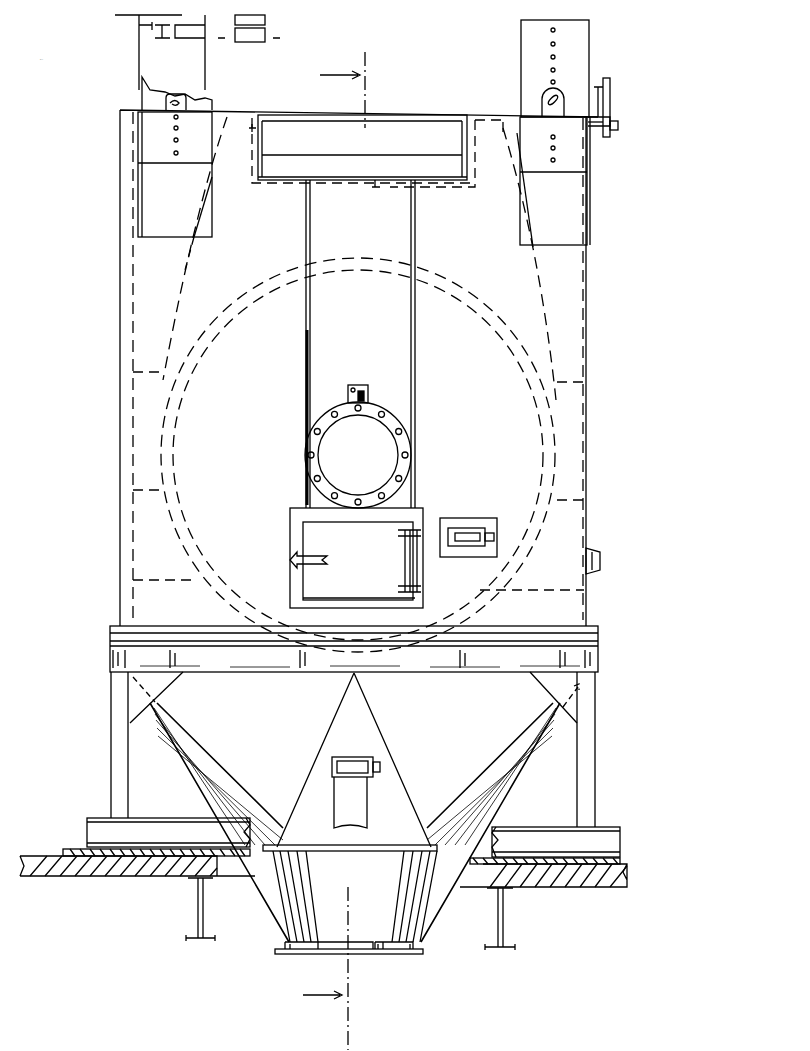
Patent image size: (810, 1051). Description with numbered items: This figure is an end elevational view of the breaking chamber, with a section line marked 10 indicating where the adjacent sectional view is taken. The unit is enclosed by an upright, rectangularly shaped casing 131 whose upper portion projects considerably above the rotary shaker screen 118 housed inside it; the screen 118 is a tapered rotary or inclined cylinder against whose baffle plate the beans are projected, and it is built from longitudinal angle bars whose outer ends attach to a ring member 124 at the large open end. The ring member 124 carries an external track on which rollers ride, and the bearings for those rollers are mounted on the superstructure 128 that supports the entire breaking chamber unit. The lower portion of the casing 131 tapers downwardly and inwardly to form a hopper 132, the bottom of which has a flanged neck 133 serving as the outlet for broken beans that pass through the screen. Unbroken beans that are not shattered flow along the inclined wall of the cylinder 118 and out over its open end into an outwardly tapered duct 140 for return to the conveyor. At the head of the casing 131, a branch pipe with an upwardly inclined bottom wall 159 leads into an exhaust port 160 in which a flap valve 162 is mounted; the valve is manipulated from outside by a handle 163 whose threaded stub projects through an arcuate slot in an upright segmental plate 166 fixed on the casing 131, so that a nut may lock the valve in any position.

The section line 10- 10 is at (334, 551).
The shaker screen 118 is at (280, 282).
The ring member 124 is at (543, 455).
The superstructure 128 is at (598, 667).
The casing 131 is at (587, 422).
The hopper 132 is at (349, 807).
The flanged neck 133 is at (415, 955).
The outwardly tapered duct 140 is at (197, 728).
The bottom wall 159 is at (178, 233).
The exhaust port 160 is at (452, 181).
The flap valve 162 is at (425, 135).
The handle 163 is at (604, 86).
The segmental plate 166 is at (611, 90).